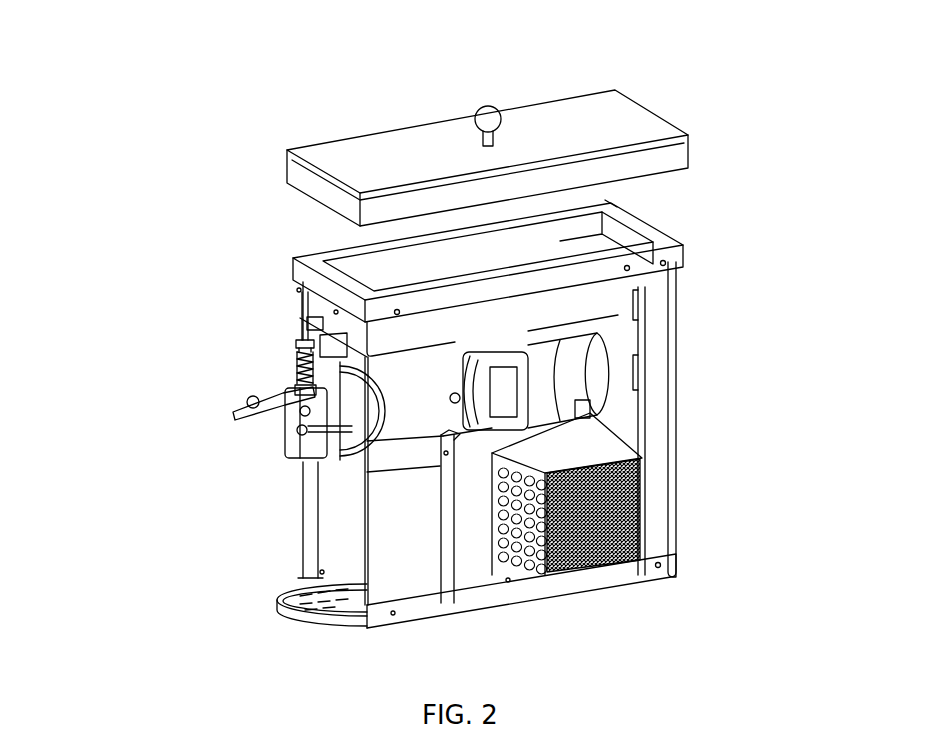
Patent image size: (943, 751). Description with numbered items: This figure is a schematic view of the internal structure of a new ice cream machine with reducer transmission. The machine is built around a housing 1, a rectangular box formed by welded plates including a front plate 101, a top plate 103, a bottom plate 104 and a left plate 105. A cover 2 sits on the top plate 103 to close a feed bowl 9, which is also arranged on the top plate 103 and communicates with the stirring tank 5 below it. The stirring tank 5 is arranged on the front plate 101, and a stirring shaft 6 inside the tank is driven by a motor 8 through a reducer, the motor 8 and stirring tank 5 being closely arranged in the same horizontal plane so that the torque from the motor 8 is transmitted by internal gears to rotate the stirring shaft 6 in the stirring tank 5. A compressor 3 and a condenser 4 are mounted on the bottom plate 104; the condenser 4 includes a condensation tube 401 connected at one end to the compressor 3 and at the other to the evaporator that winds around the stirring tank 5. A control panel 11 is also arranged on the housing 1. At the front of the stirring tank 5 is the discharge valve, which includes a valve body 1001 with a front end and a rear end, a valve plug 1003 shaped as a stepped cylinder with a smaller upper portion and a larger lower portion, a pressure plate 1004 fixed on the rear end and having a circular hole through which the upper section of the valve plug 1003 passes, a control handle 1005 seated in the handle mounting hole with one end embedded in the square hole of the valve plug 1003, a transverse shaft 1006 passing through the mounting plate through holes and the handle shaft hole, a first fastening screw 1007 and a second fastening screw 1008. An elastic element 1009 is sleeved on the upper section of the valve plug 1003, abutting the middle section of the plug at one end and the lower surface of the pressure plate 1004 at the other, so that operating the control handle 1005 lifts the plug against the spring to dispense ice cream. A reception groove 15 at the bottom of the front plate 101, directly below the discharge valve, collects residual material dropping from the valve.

The housing 1 is at (663, 478).
The cover 2 is at (618, 117).
The compressor 3 is at (397, 513).
The condenser 4 is at (640, 527).
The stirring tank 5 is at (370, 287).
The stirring shaft 6 is at (512, 345).
The motor 8 is at (580, 383).
The feed bowl 9 is at (383, 270).
The control panel 11 is at (313, 273).
The reception groove 15 is at (307, 602).
The front plate 101 is at (308, 512).
The top plate 103 is at (613, 212).
The bottom plate 104 is at (490, 598).
The left plate 105 is at (582, 413).
The condensation tube 401 is at (620, 563).
The valve body 1001 is at (283, 457).
The valve plug 1003 is at (297, 345).
The pressure plate 1004 is at (297, 337).
The control handle 1005 is at (235, 418).
The transverse shaft 1006 is at (268, 417).
The first fastening screw 1007 is at (299, 350).
The second fastening screw 1008 is at (297, 392).
The elastic element 1009 is at (297, 372).